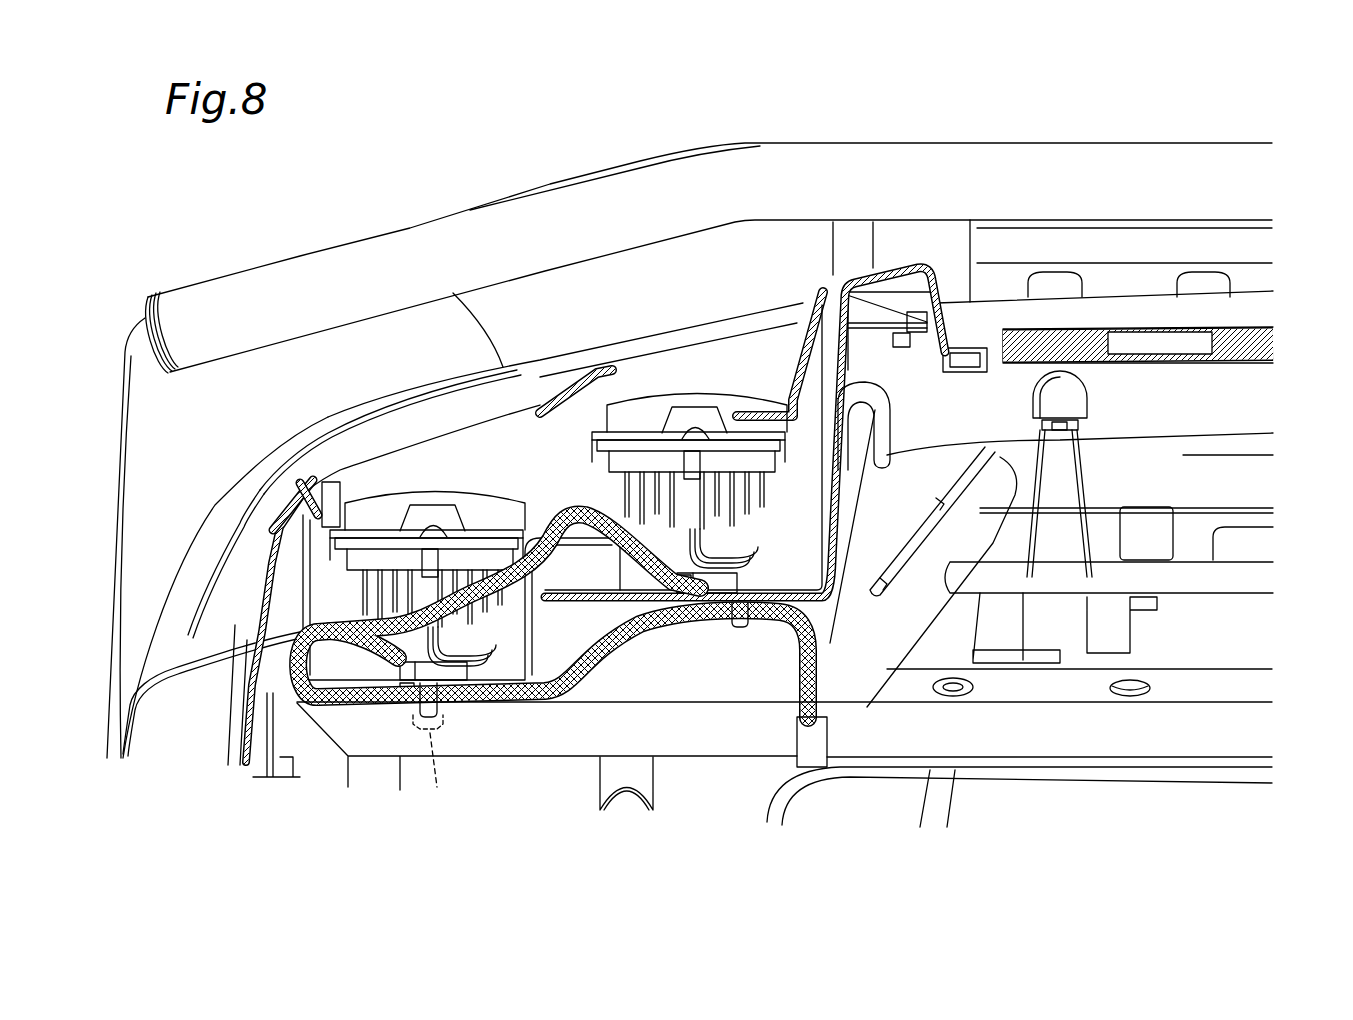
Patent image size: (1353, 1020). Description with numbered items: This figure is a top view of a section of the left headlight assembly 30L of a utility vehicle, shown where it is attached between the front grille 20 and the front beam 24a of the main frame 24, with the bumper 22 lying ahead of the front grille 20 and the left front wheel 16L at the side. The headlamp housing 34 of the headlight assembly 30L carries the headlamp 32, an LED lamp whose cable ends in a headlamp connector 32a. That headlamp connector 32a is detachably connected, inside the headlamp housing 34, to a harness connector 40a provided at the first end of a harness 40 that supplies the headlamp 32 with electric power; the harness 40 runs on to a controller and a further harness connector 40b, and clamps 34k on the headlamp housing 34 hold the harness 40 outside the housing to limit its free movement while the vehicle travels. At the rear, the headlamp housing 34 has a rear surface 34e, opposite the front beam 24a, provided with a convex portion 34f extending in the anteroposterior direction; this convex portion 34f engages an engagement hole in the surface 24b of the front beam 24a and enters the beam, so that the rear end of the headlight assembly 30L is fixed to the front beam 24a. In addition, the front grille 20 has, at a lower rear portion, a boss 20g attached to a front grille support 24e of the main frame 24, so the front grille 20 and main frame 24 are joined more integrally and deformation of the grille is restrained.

The bumper 22 is at (897, 163).
The front grille 20 is at (652, 347).
The left front wheel 16L is at (342, 388).
The left headlight assembly 30L is at (846, 516).
The headlamp housing 34 is at (540, 615).
The headlamp 32 is at (440, 487).
The headlamp connector 32a is at (447, 674).
The harness connector 40a is at (407, 698).
The harness 40 is at (583, 683).
The clamps 34k is at (740, 620).
The rear surface 34e is at (440, 704).
The convex portion 34f is at (436, 764).
The main frame 24 is at (498, 758).
The front beam 24a is at (718, 746).
The surface 24b is at (680, 700).
The harness connector 40b is at (822, 737).
The front grille support 24e is at (1100, 480).
The boss 20g is at (1072, 400).